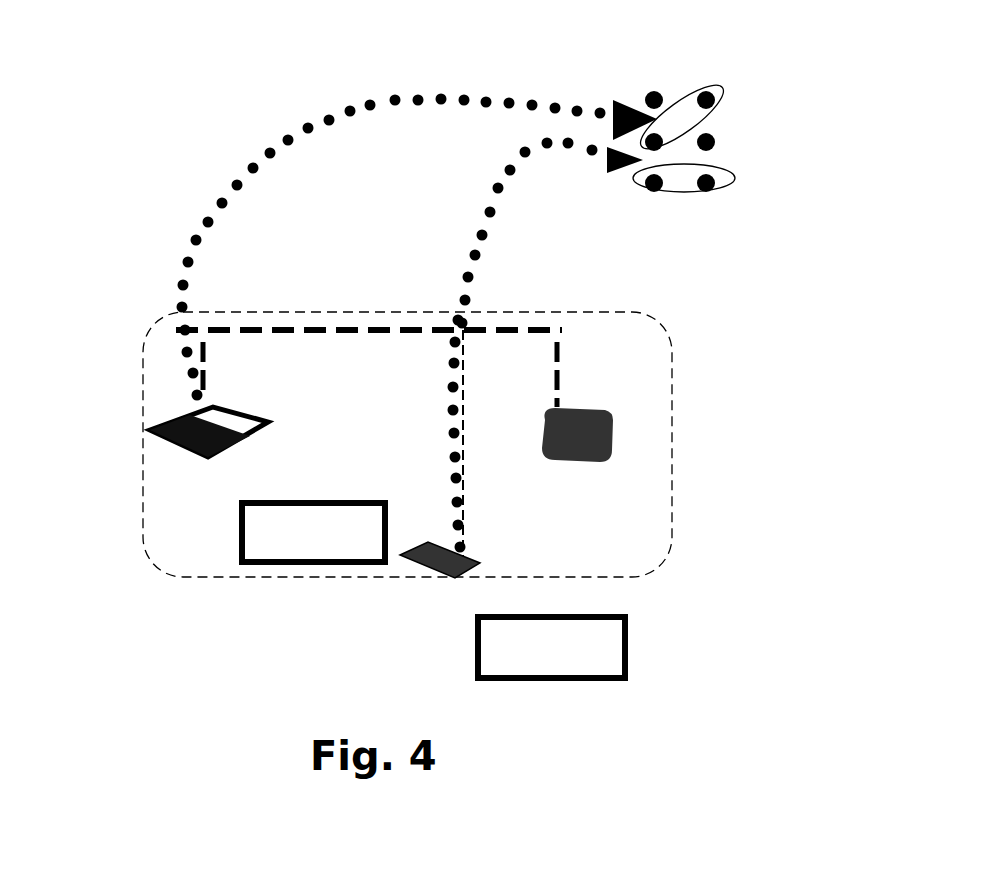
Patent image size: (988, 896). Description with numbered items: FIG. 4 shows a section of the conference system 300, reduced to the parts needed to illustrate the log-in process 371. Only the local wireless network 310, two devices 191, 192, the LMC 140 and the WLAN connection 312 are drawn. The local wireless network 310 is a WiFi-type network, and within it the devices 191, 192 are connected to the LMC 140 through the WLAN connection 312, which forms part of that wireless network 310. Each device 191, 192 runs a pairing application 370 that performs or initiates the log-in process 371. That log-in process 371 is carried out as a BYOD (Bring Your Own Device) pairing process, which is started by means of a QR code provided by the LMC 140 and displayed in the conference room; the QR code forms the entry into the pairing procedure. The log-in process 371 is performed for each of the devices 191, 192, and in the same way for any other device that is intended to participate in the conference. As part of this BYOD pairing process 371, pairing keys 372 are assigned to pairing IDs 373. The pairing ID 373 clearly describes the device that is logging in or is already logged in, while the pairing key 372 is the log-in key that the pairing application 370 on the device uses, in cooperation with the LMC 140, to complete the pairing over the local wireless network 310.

The conference system 300 is at (178, 115).
The local wireless network 310 is at (372, 598).
The WLAN connection 312 is at (340, 328).
The device 191 is at (172, 420).
The device 192 is at (433, 572).
The LMC 140 is at (615, 441).
The pairing application 370 is at (243, 482).
The log-in process 371 is at (688, 85).
The pairing key 372 is at (311, 563).
The pairing ID 373 is at (707, 195).